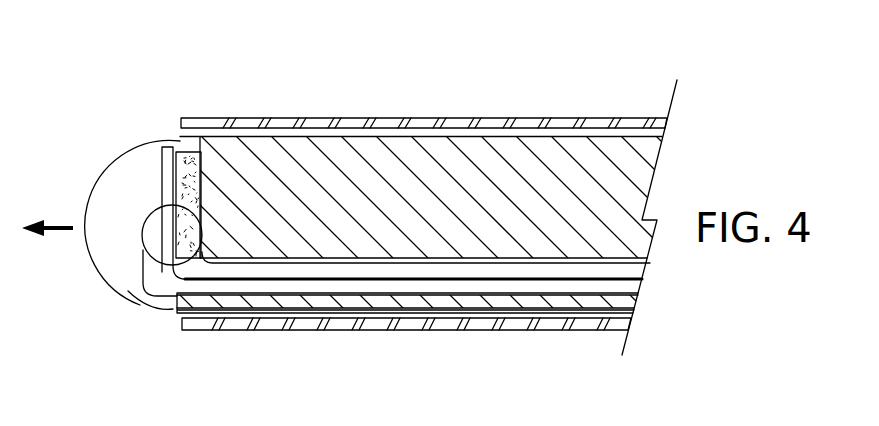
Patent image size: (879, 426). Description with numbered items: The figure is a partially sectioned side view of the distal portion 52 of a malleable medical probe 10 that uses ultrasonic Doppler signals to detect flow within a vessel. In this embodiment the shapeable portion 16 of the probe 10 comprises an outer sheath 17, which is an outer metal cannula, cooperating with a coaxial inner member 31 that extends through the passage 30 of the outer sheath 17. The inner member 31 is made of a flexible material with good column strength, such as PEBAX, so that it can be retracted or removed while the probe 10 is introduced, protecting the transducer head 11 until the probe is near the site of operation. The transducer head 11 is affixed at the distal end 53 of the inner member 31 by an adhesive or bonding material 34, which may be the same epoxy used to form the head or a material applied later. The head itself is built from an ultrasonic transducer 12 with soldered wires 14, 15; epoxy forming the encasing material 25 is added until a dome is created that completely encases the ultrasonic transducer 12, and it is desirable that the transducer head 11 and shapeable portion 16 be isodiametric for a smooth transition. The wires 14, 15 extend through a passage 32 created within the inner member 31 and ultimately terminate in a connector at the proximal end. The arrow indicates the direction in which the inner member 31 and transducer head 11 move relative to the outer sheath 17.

The malleable medical probe 10 is at (572, 40).
The transducer head 11 is at (120, 157).
The ultrasonic transducer 12 is at (168, 147).
The wire 14 is at (285, 292).
The wire 15 is at (355, 270).
The shapeable portion 16 is at (372, 60).
The outer sheath 17 is at (455, 118).
The encasing material 25 is at (108, 167).
The passage 30 is at (462, 132).
The coaxial inner member 31 is at (360, 152).
The passage 32 is at (168, 294).
The adhesive or bonding material 34 is at (187, 155).
The distal portion 52 is at (581, 68).
The distal end 53 is at (206, 70).